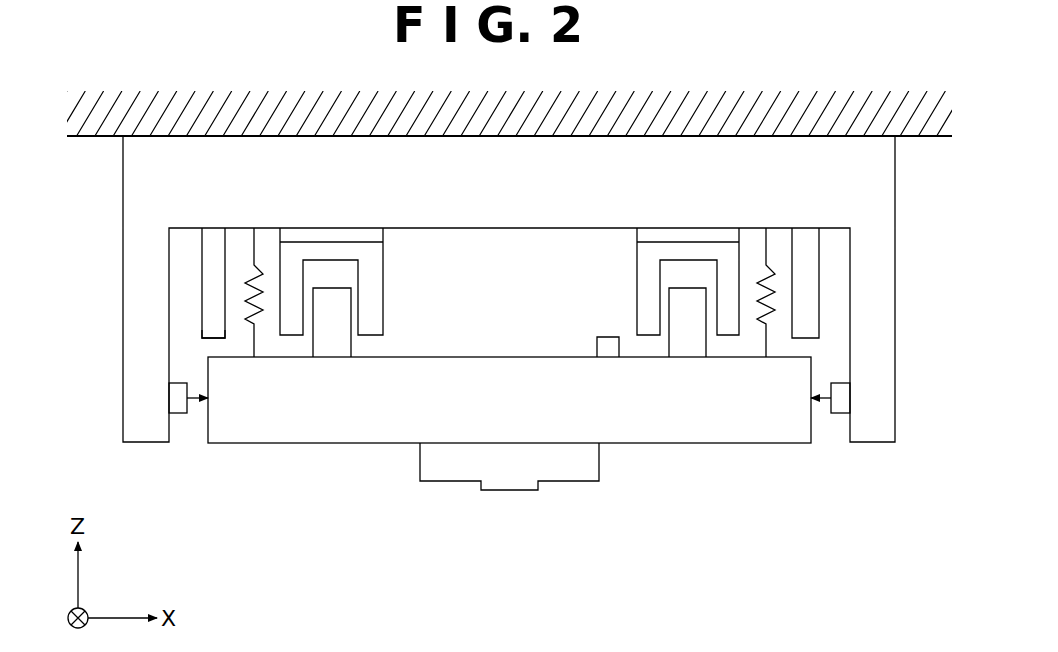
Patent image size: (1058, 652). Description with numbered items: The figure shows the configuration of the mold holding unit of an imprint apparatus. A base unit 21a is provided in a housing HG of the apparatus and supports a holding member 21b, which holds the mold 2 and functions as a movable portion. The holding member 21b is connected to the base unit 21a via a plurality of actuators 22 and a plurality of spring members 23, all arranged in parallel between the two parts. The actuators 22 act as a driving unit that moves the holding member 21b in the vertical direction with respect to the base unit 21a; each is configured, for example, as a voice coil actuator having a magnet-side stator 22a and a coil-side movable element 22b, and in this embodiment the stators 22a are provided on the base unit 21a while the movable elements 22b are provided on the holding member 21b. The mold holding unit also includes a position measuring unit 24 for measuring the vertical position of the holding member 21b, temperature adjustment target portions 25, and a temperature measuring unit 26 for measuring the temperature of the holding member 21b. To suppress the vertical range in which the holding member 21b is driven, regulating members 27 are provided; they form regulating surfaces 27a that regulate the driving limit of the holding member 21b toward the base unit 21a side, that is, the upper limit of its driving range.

The housing HG is at (897, 100).
The mold 2 is at (446, 470).
The base unit 21a is at (138, 430).
The holding member 21b is at (273, 434).
The actuators 22 is at (509, 292).
The magnet-side stator 22a is at (383, 290).
The coil-side movable element 22b is at (340, 350).
The spring members 23 is at (250, 346).
The position measuring unit 24 is at (182, 400).
The temperature adjustment target portions 25 is at (383, 238).
The temperature measuring unit 26 is at (607, 337).
The regulating members 27 is at (212, 257).
The regulating surfaces 27a is at (213, 342).